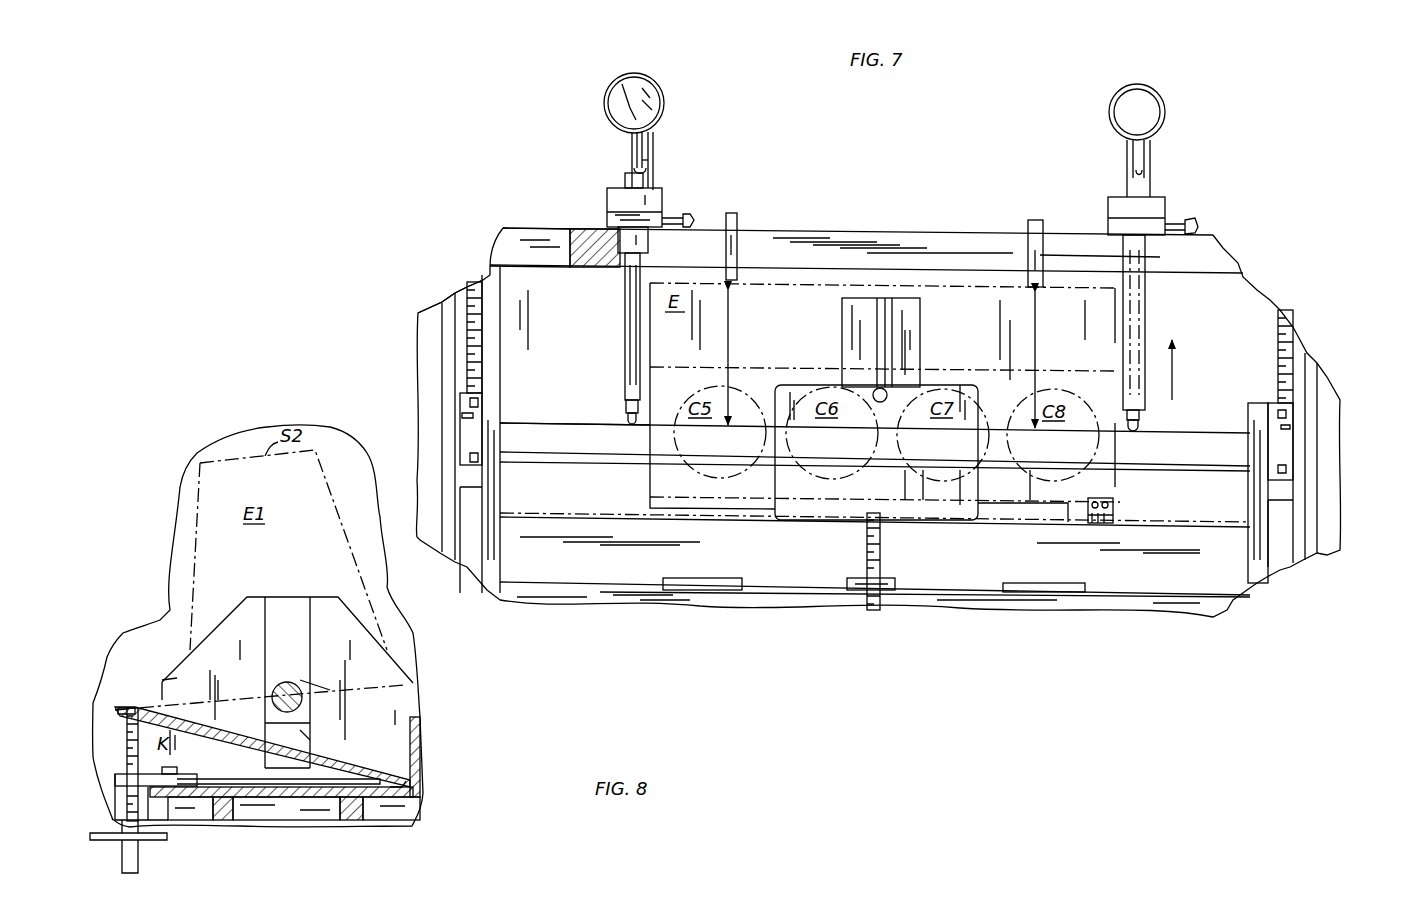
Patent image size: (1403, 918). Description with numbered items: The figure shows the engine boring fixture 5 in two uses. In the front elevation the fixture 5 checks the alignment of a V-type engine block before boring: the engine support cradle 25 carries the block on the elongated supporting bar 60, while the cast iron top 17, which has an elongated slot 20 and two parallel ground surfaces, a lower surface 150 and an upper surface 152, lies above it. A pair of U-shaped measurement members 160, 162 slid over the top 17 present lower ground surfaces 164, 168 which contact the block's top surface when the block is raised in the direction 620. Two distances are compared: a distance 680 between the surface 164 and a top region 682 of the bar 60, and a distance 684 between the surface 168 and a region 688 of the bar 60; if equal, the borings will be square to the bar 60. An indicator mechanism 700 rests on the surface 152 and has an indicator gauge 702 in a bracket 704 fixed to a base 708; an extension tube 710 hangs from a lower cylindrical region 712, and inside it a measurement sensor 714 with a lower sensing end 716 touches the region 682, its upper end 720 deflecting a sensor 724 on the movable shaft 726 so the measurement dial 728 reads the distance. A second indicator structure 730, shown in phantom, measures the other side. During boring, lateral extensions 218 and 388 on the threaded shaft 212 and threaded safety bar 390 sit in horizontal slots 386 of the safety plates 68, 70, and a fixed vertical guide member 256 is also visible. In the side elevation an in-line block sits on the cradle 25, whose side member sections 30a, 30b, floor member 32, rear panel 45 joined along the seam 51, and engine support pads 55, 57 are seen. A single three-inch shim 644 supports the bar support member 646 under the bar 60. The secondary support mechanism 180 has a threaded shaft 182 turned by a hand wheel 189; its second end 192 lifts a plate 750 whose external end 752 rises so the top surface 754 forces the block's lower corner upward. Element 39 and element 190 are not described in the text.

In FIG. 7, the engine fixture 5 is at (892, 160).
In FIG. 8, the engine fixture 5 is at (160, 557).
In FIG. 7, the cast iron top 17 is at (530, 240).
In FIG. 7, the elongated slot 20 is at (898, 240).
In FIG. 7, the engine support cradle 25 is at (617, 560).
In FIG. 8, the engine support cradle 25 is at (134, 668).
In FIG. 8, the front section of second side member 30a is at (258, 646).
In FIG. 8, the rear section of second side member 30b is at (354, 646).
In FIG. 8, the floor member 32 is at (280, 800).
In FIG. 7, the bottom plate 39 is at (960, 590).
In FIG. 8, the elongated rear panel 45 is at (422, 750).
In FIG. 8, the seam 51 is at (400, 790).
In FIG. 7, the engine support pad 55 is at (722, 580).
In FIG. 7, the engine support pad 57 is at (1068, 584).
In FIG. 7, the elongated supporting bar 60 is at (548, 437).
In FIG. 8, the elongated supporting bar 60 is at (278, 690).
In FIG. 7, the safety plate 68 is at (470, 433).
In FIG. 7, the safety plate 70 is at (1290, 448).
In FIG. 7, the lower ground surface 150 is at (488, 275).
In FIG. 7, the upper ground surface 152 is at (572, 230).
In FIG. 7, the U-shaped measurement member 160 is at (740, 215).
In FIG. 7, the U-shaped measurement member 162 is at (1034, 240).
In FIG. 7, the lower ground surface 164 is at (735, 295).
In FIG. 7, the lower ground surface 168 is at (1030, 295).
In FIG. 8, the secondary support mechanism 180 is at (125, 764).
In FIG. 7, the threaded shaft 182 is at (880, 562).
In FIG. 8, the threaded shaft 182 is at (118, 780).
In FIG. 8, the hand wheel 189 is at (150, 840).
In FIG. 7, the crossbar 190 is at (895, 582).
In FIG. 7, the second end of shaft 192 is at (866, 530).
In FIG. 8, the second end of shaft 192 is at (125, 722).
In FIG. 7, the threaded shaft 212 is at (482, 345).
In FIG. 7, the lateral extension 218 is at (494, 405).
In FIG. 7, the fixed vertical guide member 256 is at (905, 342).
In FIG. 7, the horizontal slot 386 is at (1290, 427).
In FIG. 7, the lateral extension 388 is at (1258, 430).
In FIG. 7, the threaded safety bar 390 is at (1278, 332).
In FIG. 7, the direction 620 is at (1169, 384).
In FIG. 8, the support shim 644 is at (303, 740).
In FIG. 8, the bar support member 646 is at (305, 710).
In FIG. 7, the distance 680 is at (730, 353).
In FIG. 7, the top region of bar 682 is at (686, 367).
In FIG. 7, the distance 684 is at (1037, 354).
In FIG. 7, the top region of bar 688 is at (1103, 385).
In FIG. 7, the indicator mechanism 700 is at (633, 233).
In FIG. 7, the indicator gauge 702 is at (658, 88).
In FIG. 7, the bracket 704 is at (653, 140).
In FIG. 7, the base 708 is at (612, 200).
In FIG. 7, the extension tube 710 is at (624, 318).
In FIG. 7, the lower cylindrical region 712 is at (640, 240).
In FIG. 7, the measurement sensor 714 is at (624, 405).
In FIG. 7, the lower sensing end 716 is at (627, 417).
In FIG. 7, the upper end of measurement sensor 720 is at (632, 172).
In FIG. 7, the sensor 724 is at (625, 162).
In FIG. 7, the longitudinally movable shaft 726 is at (649, 160).
In FIG. 7, the measurement dial 728 is at (642, 82).
In FIG. 7, the second indicator structure 730 is at (1112, 115).
In FIG. 8, the plate 750 is at (140, 700).
In FIG. 8, the external end of plate 752 is at (132, 670).
In FIG. 8, the top surface of plate 754 is at (195, 722).